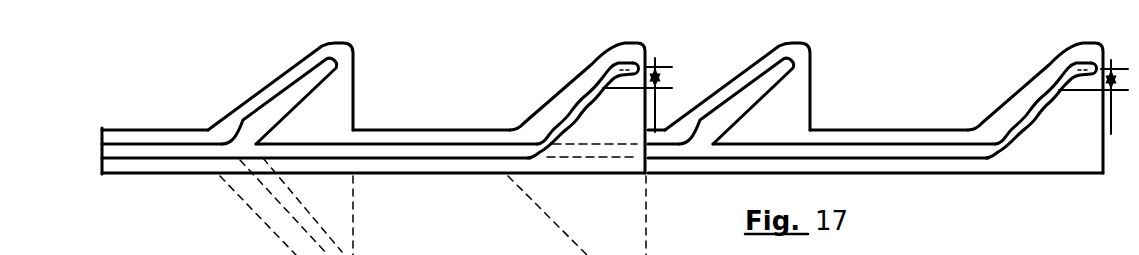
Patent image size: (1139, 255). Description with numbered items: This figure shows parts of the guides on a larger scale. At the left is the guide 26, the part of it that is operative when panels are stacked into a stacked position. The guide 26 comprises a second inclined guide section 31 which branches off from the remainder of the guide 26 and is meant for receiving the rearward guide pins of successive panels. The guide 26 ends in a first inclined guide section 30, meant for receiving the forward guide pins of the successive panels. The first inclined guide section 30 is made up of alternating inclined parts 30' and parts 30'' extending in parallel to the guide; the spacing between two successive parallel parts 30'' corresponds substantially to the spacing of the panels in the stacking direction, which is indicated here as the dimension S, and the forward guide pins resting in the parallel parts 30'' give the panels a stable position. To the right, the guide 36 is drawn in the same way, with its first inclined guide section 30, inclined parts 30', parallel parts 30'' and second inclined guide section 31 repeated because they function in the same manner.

The guide 26 is at (155, 152).
The guide 36 is at (866, 153).
The second inclined guide section 31 is at (283, 110).
The first inclined guide section 30 is at (806, 104).
The inclined parts 30' is at (783, 103).
The parallel parts 30'' is at (798, 109).
The spacing / height dimension S is at (865, 96).